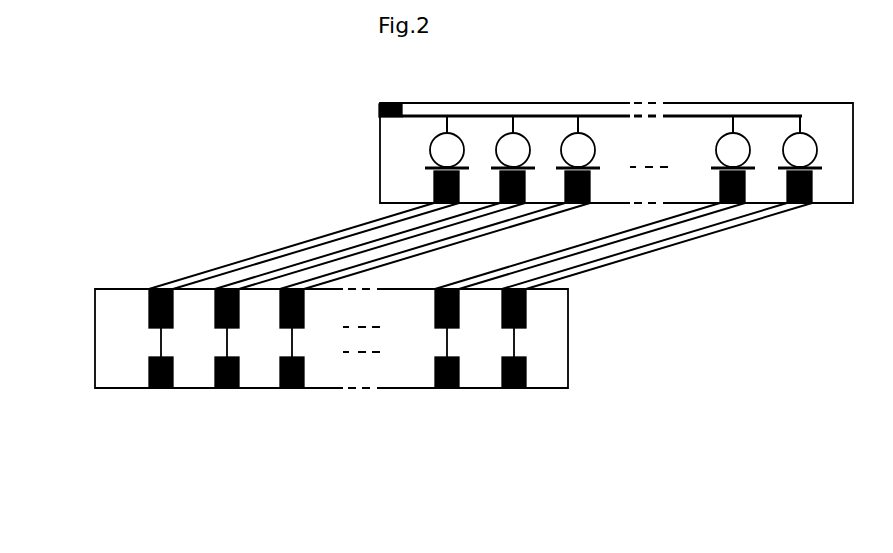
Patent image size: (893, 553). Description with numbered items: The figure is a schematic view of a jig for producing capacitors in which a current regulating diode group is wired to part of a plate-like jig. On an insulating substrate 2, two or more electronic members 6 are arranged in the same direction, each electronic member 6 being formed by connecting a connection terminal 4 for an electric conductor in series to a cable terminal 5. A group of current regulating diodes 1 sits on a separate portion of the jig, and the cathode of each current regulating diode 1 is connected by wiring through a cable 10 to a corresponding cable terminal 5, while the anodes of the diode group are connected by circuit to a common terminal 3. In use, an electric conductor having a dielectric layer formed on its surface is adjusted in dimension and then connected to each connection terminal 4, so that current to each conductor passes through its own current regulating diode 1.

The current regulating diode 1 is at (428, 150).
The insulating substrate 2 is at (468, 110).
The terminal 3 is at (380, 112).
The connection terminal 4 is at (150, 372).
The cable terminal 5 is at (148, 305).
The electronic member 6 is at (136, 351).
The cable 10 is at (251, 262).